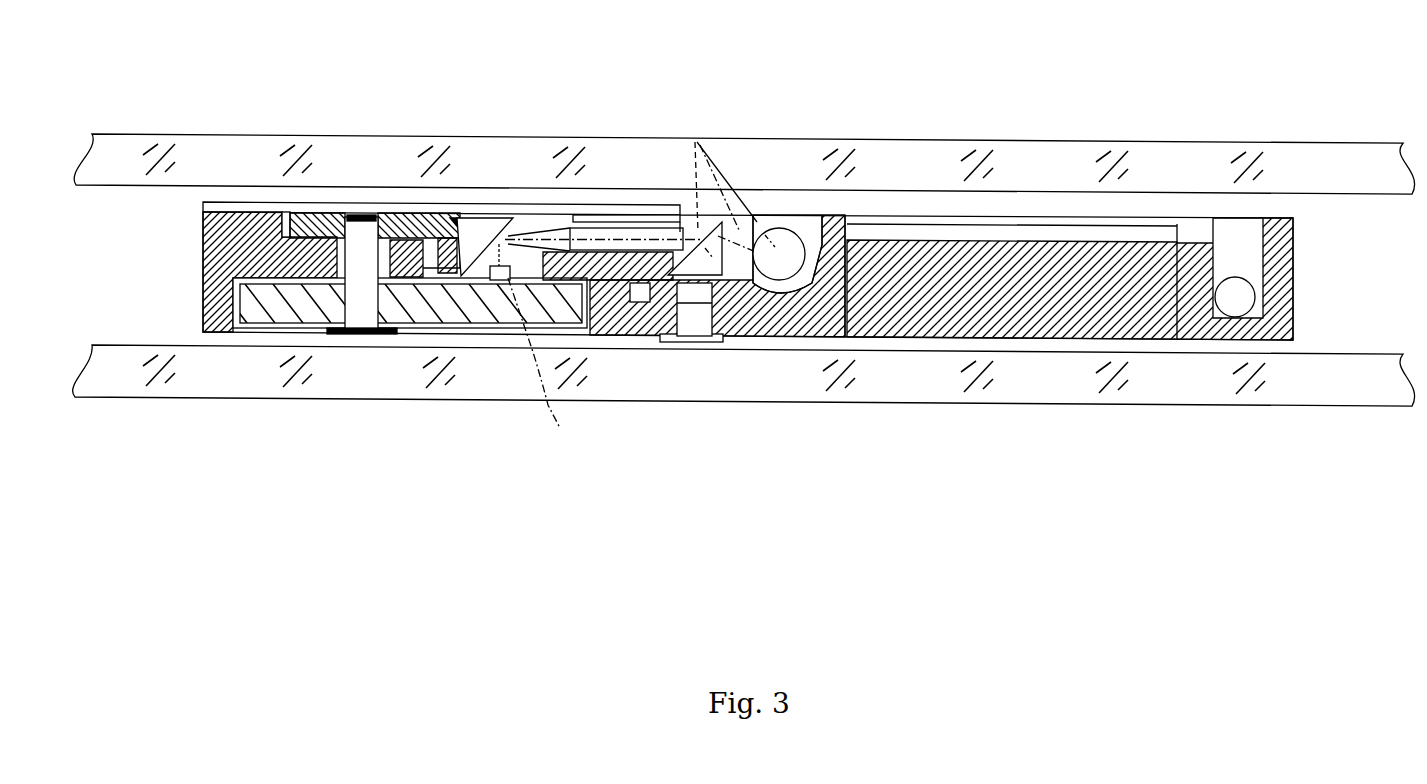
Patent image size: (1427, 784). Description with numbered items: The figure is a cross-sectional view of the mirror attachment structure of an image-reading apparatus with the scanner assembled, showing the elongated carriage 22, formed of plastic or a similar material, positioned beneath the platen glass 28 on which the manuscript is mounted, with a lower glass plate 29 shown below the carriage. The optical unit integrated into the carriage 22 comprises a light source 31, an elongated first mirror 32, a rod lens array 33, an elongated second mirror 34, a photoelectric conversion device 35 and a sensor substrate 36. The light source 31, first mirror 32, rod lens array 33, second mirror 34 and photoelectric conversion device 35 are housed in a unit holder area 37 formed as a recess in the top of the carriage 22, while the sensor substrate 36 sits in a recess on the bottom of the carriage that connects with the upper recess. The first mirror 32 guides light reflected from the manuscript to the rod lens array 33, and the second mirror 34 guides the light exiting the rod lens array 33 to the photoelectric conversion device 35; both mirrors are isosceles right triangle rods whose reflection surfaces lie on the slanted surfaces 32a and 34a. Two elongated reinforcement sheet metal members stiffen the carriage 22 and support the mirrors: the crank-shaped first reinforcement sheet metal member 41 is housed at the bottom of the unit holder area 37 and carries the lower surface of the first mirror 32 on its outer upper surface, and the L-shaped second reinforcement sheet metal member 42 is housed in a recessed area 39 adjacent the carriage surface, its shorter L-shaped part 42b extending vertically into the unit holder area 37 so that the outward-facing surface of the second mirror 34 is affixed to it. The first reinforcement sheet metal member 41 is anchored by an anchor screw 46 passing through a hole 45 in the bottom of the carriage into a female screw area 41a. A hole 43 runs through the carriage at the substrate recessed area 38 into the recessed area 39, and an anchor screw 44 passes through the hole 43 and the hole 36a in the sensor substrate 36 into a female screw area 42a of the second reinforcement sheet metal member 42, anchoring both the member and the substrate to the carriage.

The carriage 22 is at (1040, 320).
The platen glass 28 is at (933, 155).
The lower glass plate 29 is at (905, 388).
The light source 31 is at (805, 232).
The first mirror 32 is at (735, 222).
The slanted surface 32a is at (682, 200).
The rod lens array 33 is at (615, 225).
The second mirror 34 is at (480, 222).
The slanted surface 34a is at (497, 330).
The photoelectric conversion device 35 is at (546, 373).
The sensor substrate 36 is at (447, 320).
The hole 36a is at (330, 325).
The unit holder area 37 is at (548, 226).
The substrate recessed area 38 is at (265, 332).
The recessed area 39 is at (285, 212).
The first reinforcement sheet metal member 41 is at (645, 338).
The female screw area 41a is at (738, 340).
The second reinforcement sheet metal member 42 is at (315, 212).
The female screw area 42a is at (388, 214).
The L-shaped part 42b is at (433, 214).
The hole 43 is at (398, 332).
The anchor screw 44 is at (372, 334).
The hole 45 is at (698, 343).
The anchor screw 46 is at (690, 342).